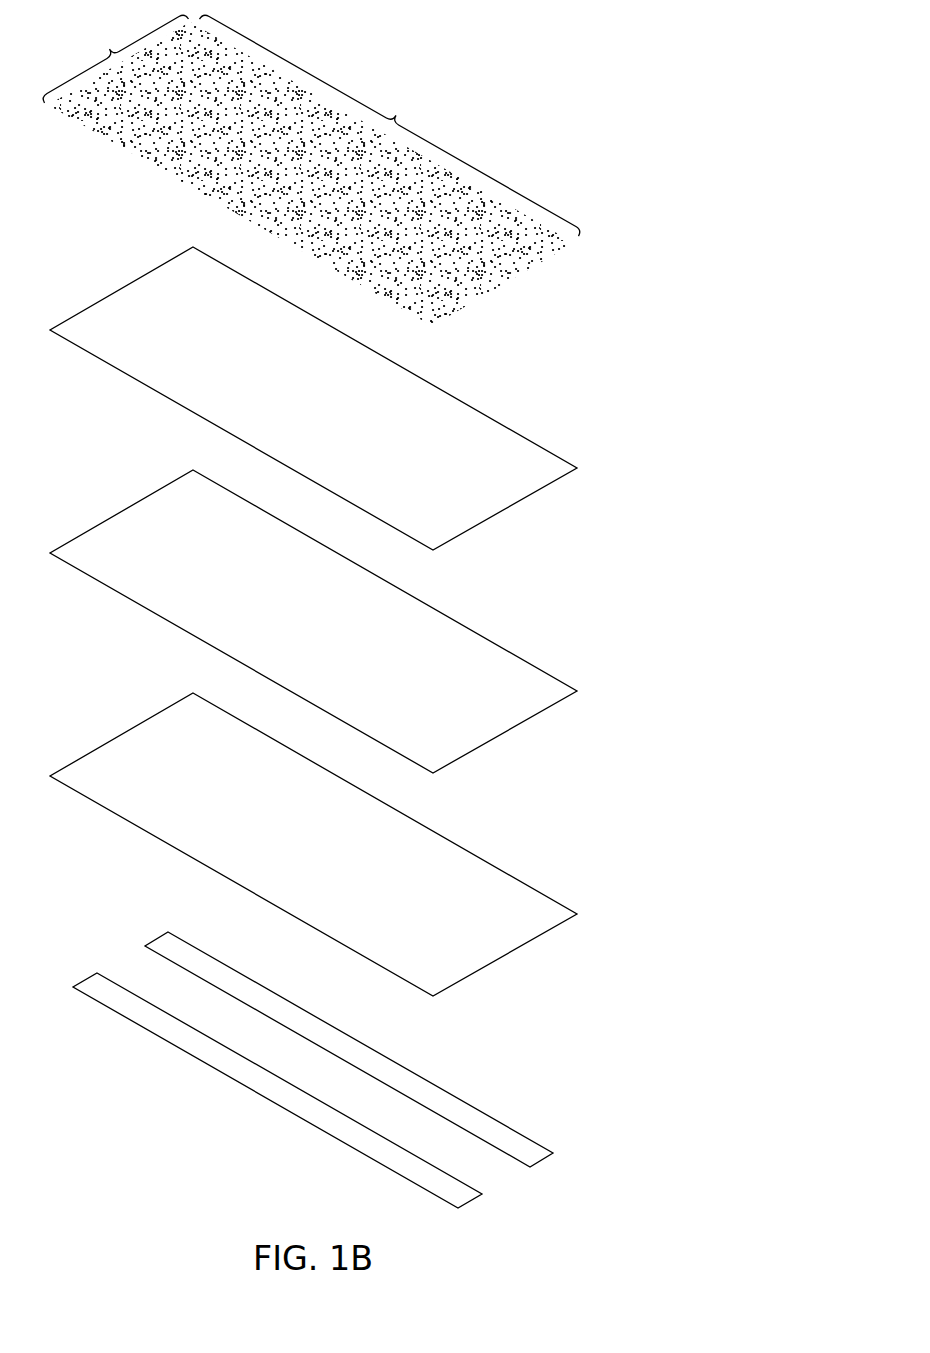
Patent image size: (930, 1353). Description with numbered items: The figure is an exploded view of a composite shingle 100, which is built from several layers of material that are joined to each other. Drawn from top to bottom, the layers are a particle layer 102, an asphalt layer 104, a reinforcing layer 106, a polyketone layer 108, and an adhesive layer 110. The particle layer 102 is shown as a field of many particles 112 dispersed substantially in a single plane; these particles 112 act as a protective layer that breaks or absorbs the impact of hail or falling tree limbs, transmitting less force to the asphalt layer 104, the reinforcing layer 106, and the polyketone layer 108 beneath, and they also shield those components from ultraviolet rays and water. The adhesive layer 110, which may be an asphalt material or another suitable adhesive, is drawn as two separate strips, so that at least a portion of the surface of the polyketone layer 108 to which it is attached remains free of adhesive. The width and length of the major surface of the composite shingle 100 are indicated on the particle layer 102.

The composite shingle 100 is at (528, 30).
The particle layer 102 is at (315, 174).
The asphalt layer 104 is at (416, 375).
The reinforcing layer 106 is at (416, 598).
The polyketone layer 108 is at (416, 822).
The adhesive layer 110 is at (365, 1124).
The particles 112 is at (173, 143).